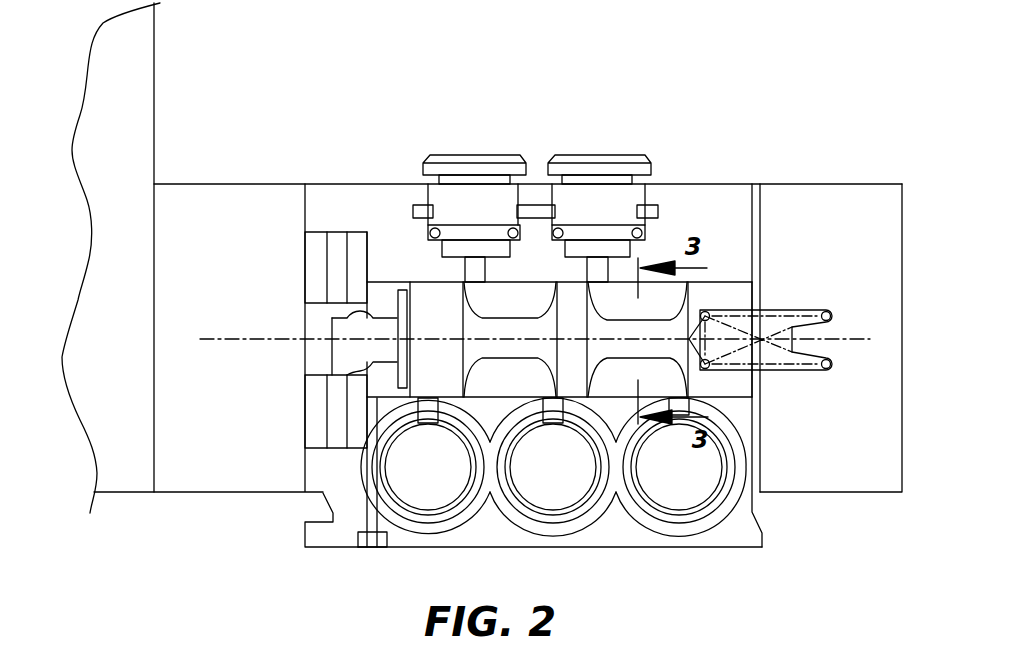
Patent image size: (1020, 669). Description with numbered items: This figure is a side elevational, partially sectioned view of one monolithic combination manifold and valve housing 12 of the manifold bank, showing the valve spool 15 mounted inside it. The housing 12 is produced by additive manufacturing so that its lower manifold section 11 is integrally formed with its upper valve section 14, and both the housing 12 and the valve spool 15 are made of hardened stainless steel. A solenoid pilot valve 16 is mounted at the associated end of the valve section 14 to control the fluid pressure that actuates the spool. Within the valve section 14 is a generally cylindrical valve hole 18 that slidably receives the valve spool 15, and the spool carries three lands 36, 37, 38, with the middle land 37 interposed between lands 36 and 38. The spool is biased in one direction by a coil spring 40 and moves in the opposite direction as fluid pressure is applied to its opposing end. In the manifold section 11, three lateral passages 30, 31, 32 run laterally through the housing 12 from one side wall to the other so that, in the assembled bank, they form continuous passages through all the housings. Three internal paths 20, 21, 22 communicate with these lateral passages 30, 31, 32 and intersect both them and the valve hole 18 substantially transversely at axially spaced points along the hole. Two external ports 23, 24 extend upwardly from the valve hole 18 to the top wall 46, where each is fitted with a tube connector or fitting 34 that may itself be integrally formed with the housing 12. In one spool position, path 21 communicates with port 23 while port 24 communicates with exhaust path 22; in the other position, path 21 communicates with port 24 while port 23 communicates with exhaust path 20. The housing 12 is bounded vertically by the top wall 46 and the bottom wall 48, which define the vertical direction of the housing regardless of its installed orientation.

The manifold section 11 is at (347, 468).
The housing 12 is at (212, 135).
The valve section 14 is at (732, 205).
The valve spool 15 is at (340, 349).
The solenoid pilot valve 16 is at (117, 254).
The valve hole 18 is at (655, 300).
The internal path 20 is at (440, 413).
The internal path 21 is at (568, 418).
The internal path 22 is at (692, 402).
The external port 23 is at (463, 270).
The external port 24 is at (610, 268).
The lateral passage 30 is at (438, 485).
The lateral passage 31 is at (568, 478).
The lateral passage 32 is at (693, 480).
The tube connector or fitting 34 is at (565, 172).
The land 36 is at (559, 339).
The land 37 is at (572, 300).
The land 38 is at (746, 312).
The coil spring 40 is at (760, 292).
The top wall 46 is at (722, 183).
The bottom wall 48 is at (328, 548).